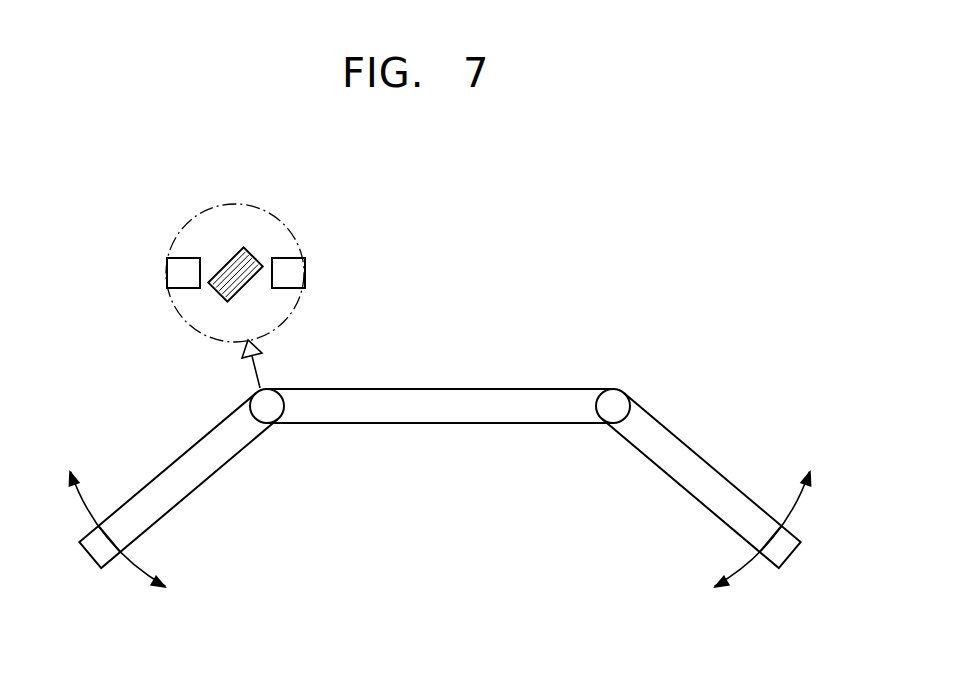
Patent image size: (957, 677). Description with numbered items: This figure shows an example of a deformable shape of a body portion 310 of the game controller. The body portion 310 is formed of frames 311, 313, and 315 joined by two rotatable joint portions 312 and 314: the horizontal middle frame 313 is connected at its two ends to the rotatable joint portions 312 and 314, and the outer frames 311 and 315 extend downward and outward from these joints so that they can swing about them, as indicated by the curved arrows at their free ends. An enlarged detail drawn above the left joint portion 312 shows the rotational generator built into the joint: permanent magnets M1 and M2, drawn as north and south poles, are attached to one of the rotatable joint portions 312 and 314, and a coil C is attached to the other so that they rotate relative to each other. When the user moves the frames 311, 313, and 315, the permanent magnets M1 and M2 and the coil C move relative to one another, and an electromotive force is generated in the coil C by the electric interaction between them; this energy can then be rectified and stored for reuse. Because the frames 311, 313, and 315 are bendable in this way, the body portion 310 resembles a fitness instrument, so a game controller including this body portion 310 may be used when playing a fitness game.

The body portion 310 is at (648, 308).
The frame 311 is at (187, 482).
The rotatable joint portion 312 is at (270, 415).
The frame 313 is at (443, 423).
The rotatable joint portion 314 is at (610, 415).
The frame 315 is at (693, 490).
The coil C is at (241, 249).
The permanent magnet M1 is at (181, 258).
The permanent magnet M2 is at (292, 258).